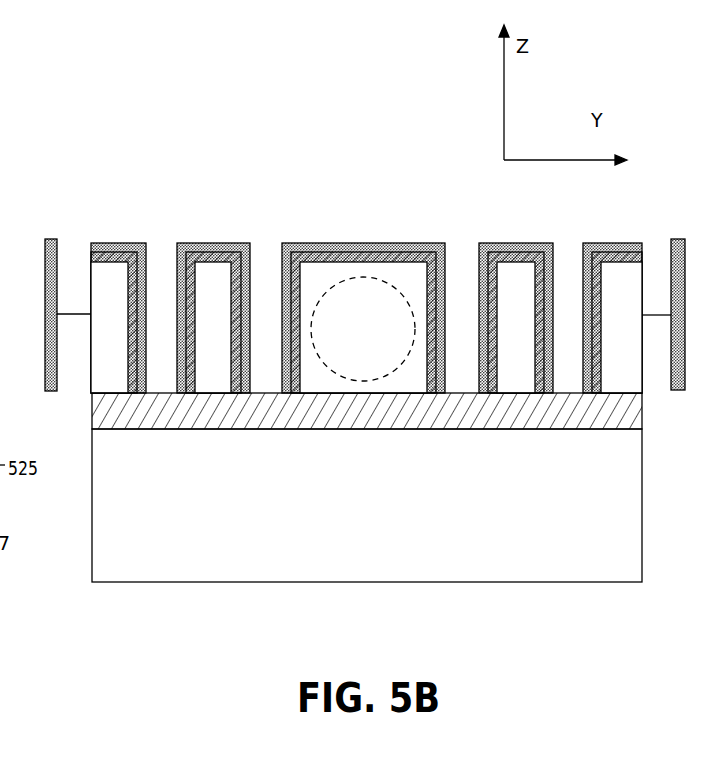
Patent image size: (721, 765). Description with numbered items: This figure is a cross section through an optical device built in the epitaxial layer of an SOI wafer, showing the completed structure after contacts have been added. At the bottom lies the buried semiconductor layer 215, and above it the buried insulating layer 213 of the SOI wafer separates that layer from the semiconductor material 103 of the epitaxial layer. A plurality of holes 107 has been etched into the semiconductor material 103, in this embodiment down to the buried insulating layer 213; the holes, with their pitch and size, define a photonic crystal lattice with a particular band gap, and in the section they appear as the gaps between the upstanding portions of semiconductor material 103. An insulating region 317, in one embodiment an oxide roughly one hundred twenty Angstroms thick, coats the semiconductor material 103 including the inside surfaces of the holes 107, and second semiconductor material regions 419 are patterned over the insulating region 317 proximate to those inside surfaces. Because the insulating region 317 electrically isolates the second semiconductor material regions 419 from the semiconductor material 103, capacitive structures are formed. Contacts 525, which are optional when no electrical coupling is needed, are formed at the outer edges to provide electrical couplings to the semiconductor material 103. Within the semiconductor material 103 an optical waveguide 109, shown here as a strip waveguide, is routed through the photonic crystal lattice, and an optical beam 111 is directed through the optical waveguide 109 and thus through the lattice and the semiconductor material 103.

The semiconductor material 103 is at (98, 377).
The plurality of holes 107 is at (162, 253).
The optical waveguide 109 is at (322, 380).
The optical beam 111 is at (385, 378).
The buried insulating layer 213 is at (93, 417).
The buried semiconductor layer 215 is at (103, 515).
The insulating region 317 is at (91, 257).
The second semiconductor material regions 419 is at (110, 247).
The contacts 525 is at (42, 268).